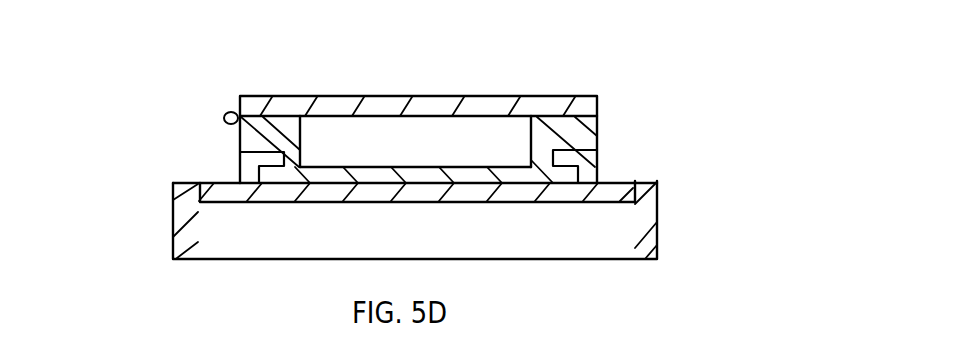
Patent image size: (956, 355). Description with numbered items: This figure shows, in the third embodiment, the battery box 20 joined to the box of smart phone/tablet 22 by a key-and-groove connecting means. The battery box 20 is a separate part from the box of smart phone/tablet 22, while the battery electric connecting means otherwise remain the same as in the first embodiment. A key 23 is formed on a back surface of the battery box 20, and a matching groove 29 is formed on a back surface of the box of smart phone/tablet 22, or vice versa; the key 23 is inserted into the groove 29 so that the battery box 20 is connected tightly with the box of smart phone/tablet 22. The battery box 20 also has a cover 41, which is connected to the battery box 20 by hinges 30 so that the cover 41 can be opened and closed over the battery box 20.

The housing 20 is at (257, 137).
The base 22 is at (610, 225).
The substrate layer 23 is at (580, 171).
The hook 29 is at (590, 151).
The sealing ring 30 is at (225, 116).
The top cover 41 is at (505, 105).